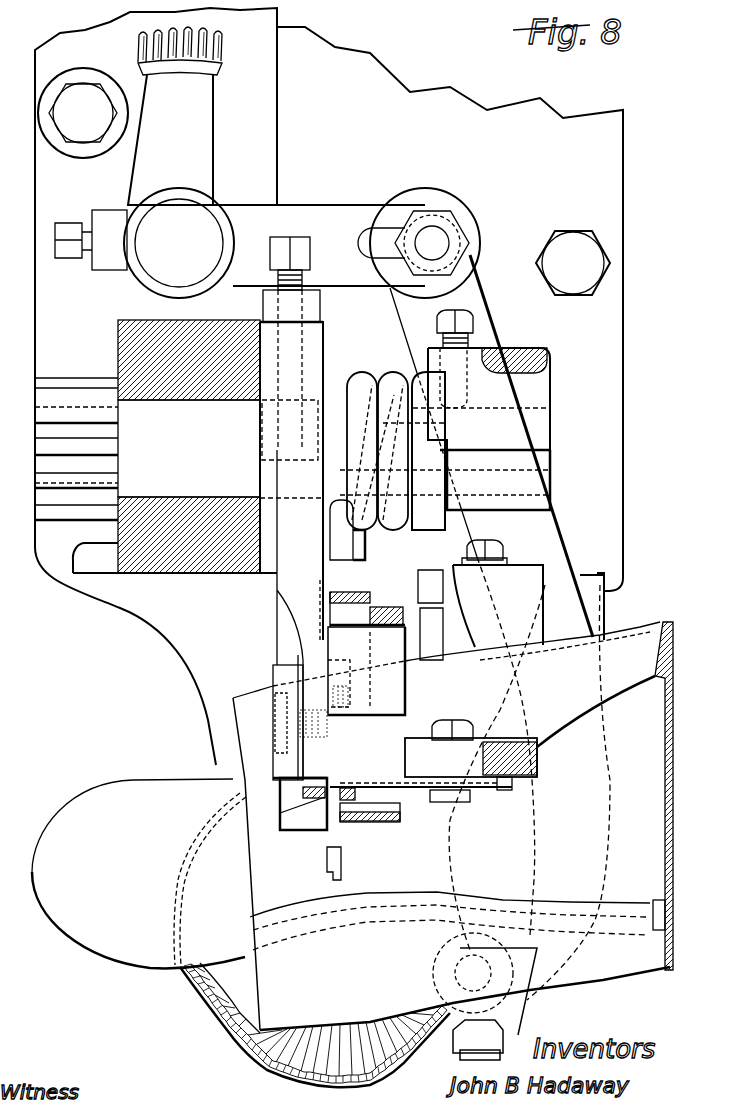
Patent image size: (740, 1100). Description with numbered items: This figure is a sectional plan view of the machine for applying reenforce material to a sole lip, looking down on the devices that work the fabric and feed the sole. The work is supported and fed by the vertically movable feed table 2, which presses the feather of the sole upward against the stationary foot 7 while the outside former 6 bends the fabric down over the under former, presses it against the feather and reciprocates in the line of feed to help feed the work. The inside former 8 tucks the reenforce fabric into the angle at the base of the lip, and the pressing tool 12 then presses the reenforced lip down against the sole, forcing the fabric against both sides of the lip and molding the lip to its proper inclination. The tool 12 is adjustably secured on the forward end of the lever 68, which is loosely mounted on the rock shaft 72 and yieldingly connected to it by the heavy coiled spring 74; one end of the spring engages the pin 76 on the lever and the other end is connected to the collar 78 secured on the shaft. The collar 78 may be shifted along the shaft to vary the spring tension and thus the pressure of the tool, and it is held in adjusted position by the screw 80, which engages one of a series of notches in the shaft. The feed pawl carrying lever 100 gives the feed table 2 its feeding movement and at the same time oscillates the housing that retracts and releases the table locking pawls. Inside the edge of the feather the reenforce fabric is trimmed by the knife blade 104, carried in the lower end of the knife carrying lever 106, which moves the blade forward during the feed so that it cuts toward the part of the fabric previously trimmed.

The feed table 2 is at (200, 1022).
The outside former 6 is at (360, 813).
The stationary foot 7 is at (322, 810).
The inside former 8 is at (328, 865).
The pressing tool 12 is at (280, 825).
The lever 68 is at (277, 593).
The rock shaft 72 is at (175, 446).
The coiled spring 74 is at (360, 383).
The pin 76 is at (355, 551).
The collar 78 is at (543, 397).
The screw 80 is at (440, 332).
The feed pawl carrying lever 100 is at (557, 532).
The knife blade 104 is at (433, 717).
The knife carrying lever 106 is at (537, 772).